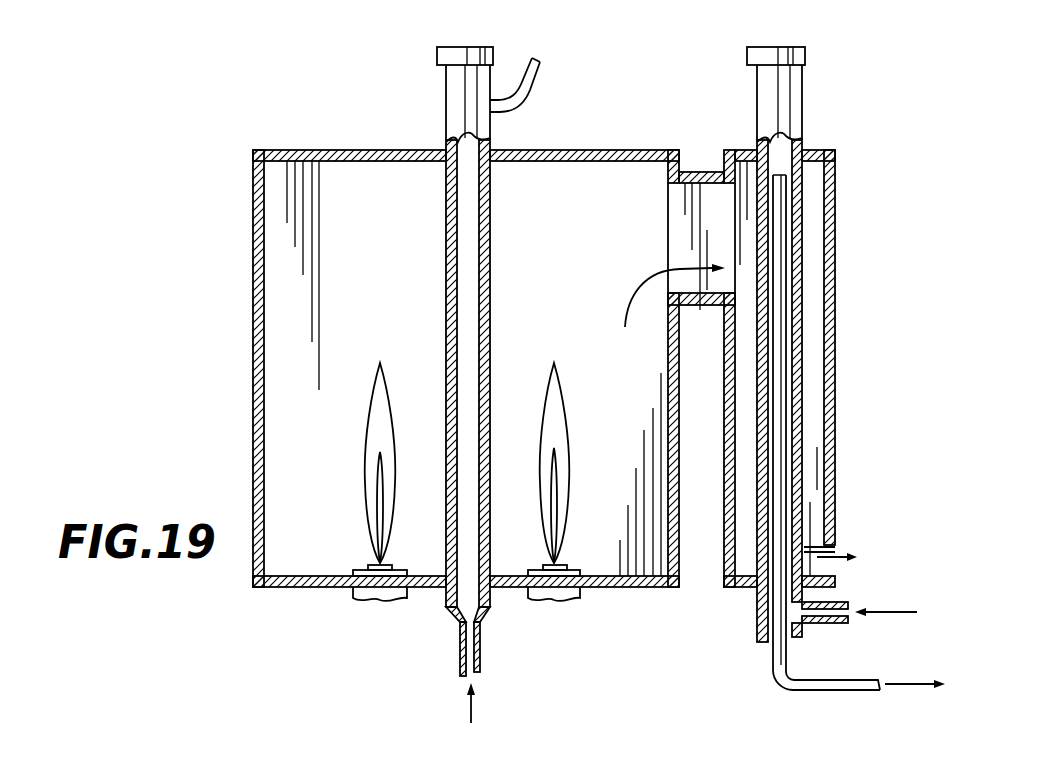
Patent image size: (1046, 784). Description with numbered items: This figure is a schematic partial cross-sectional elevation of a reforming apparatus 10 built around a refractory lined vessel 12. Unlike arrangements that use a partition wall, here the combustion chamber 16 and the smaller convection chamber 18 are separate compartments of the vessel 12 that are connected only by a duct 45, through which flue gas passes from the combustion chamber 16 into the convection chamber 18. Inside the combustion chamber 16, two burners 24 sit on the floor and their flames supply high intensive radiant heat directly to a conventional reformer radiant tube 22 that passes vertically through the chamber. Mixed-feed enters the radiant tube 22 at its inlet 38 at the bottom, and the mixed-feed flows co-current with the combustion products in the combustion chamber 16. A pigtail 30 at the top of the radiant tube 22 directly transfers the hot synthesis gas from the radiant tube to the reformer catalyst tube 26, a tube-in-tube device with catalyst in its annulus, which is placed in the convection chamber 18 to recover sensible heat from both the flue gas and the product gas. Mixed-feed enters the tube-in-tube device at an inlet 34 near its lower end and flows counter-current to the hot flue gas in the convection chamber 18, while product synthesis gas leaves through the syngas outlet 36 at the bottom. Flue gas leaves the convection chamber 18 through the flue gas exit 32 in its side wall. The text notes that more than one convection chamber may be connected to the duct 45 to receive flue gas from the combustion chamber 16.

The apparatus 10 is at (222, 133).
The refractory lined vessel 12 is at (253, 352).
The combustion chamber 16 is at (293, 300).
The convection chamber 18 is at (808, 302).
The reformer radiant tube 22 is at (446, 255).
The burner 24 is at (353, 595).
The reformer catalyst tube 26 is at (802, 208).
The pigtail 30 is at (545, 80).
The flue gas exit 32 is at (832, 548).
The inlet 34 is at (840, 600).
The syngas outlet 36 is at (845, 692).
The inlet 38 is at (458, 663).
The duct 45 is at (691, 248).